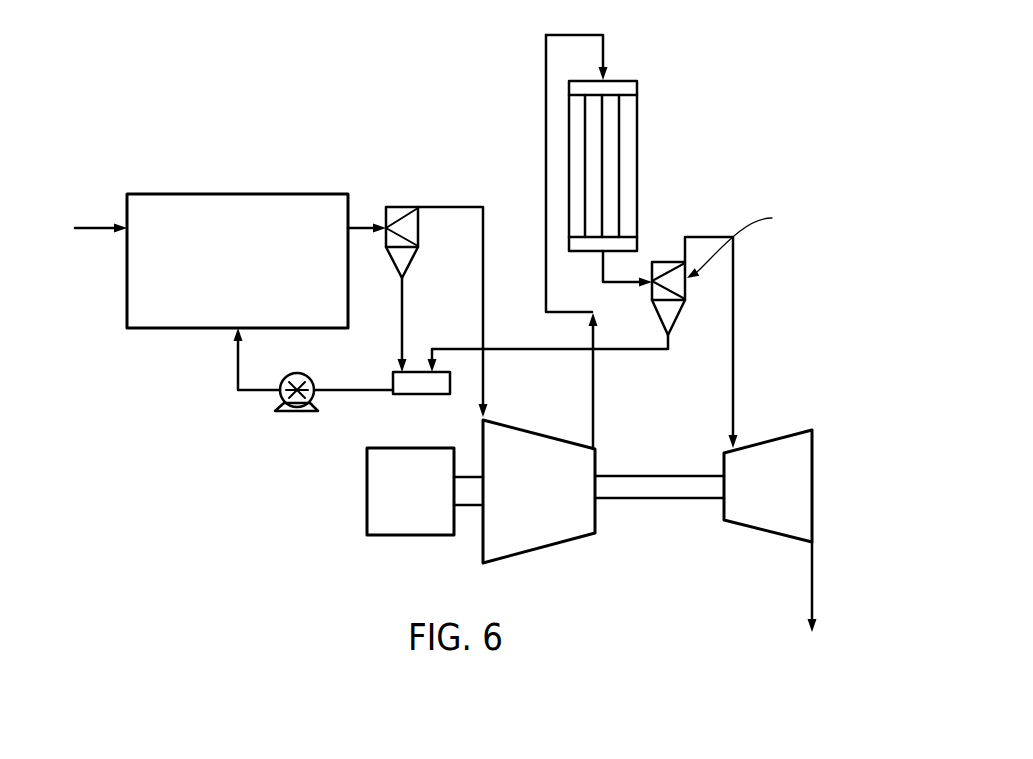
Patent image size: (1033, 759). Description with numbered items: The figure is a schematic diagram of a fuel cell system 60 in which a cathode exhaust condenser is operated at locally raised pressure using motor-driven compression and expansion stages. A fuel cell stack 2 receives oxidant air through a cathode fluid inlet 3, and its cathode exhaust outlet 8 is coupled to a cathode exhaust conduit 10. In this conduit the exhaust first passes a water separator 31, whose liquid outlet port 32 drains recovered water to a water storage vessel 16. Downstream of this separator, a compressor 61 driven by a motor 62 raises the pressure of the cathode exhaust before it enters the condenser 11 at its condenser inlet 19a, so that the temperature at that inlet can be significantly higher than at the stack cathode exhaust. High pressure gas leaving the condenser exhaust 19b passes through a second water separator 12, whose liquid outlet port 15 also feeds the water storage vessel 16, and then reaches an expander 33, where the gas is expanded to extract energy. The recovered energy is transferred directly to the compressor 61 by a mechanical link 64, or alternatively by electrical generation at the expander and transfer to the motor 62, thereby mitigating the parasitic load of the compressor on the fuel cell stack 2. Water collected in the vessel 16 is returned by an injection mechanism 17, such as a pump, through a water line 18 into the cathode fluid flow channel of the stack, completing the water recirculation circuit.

The fuel cell system 60 is at (262, 91).
The cathode fluid inlet 3 is at (104, 222).
The fuel cell stack 2 is at (230, 193).
The cathode exhaust outlet 8 is at (358, 231).
The water separator 31 is at (420, 222).
The liquid outlet port 32 is at (407, 278).
The cathode exhaust conduit 10 is at (466, 206).
The water storage vessel 16 is at (393, 382).
The injection mechanism 17 is at (296, 412).
The water line 18 is at (238, 378).
The condenser inlet 19a is at (603, 66).
The condenser 11 is at (640, 103).
The condenser exhaust 19b is at (607, 250).
The water separator 12 is at (687, 291).
The liquid outlet port 15 is at (670, 338).
The compressor 61 is at (542, 548).
The motor 62 is at (408, 535).
The mechanical link 64 is at (648, 499).
The expander 33 is at (812, 487).